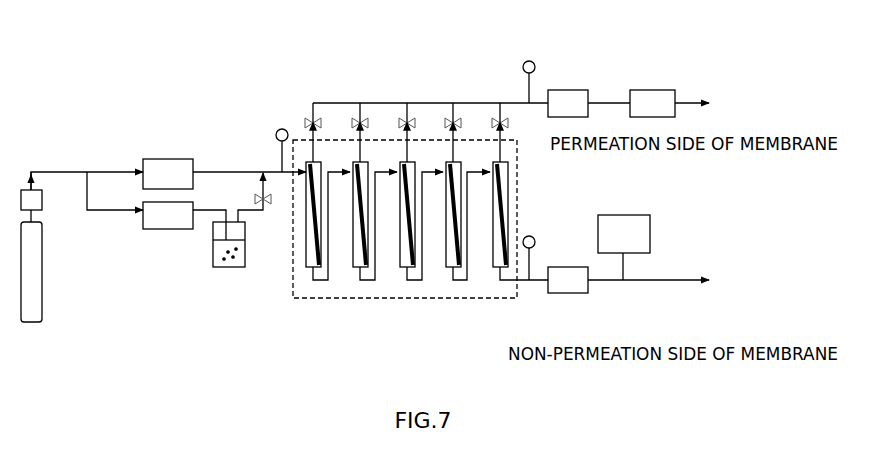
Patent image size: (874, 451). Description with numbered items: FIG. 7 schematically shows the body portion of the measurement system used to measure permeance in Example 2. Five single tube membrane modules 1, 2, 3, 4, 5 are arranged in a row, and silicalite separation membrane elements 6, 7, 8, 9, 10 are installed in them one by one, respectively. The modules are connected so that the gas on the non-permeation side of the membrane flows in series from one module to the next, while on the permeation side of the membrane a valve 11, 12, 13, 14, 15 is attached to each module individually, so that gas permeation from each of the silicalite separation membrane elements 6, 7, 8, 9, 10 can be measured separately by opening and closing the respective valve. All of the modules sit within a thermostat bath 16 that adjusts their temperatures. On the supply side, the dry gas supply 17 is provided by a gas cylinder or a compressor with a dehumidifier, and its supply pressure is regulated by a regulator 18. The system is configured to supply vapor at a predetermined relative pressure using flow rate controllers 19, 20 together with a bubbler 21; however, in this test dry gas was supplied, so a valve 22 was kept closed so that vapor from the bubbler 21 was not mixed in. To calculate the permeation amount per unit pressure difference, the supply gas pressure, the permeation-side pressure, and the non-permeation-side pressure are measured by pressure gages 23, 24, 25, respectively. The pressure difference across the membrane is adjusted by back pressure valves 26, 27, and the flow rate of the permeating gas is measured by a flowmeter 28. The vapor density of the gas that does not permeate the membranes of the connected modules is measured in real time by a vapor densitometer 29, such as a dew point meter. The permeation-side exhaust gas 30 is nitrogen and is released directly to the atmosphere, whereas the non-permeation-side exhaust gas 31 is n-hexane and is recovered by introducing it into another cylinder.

The single tube membrane module 1 is at (312, 272).
The single tube membrane module 2 is at (362, 272).
The single tube membrane module 3 is at (409, 272).
The single tube membrane module 4 is at (452, 272).
The single tube membrane module 5 is at (497, 272).
The silicalite separation membrane element 6 is at (310, 232).
The silicalite separation membrane element 7 is at (362, 208).
The silicalite separation membrane element 8 is at (405, 204).
The silicalite separation membrane element 9 is at (450, 198).
The silicalite separation membrane element 10 is at (497, 198).
The valve 11 is at (305, 121).
The valve 12 is at (359, 121).
The valve 13 is at (405, 118).
The valve 14 is at (428, 110).
The valve 15 is at (494, 115).
The thermostat bath 16 is at (493, 298).
The dry gas supply 17 is at (34, 322).
The regulator 18 is at (42, 205).
The flow rate controller 19 is at (150, 159).
The flow rate controller 20 is at (160, 229).
The bubbler 21 is at (218, 268).
The valve 22 is at (255, 193).
The pressure gage 23 is at (276, 135).
The pressure gage 24 is at (529, 61).
The pressure gage 25 is at (533, 236).
The back pressure valve 26 is at (570, 90).
The back pressure valve 27 is at (565, 267).
The flowmeter 28 is at (640, 90).
The vapor densitometer 29 is at (620, 215).
The exhaust gas 30 is at (756, 112).
The exhaust gas 31 is at (774, 282).